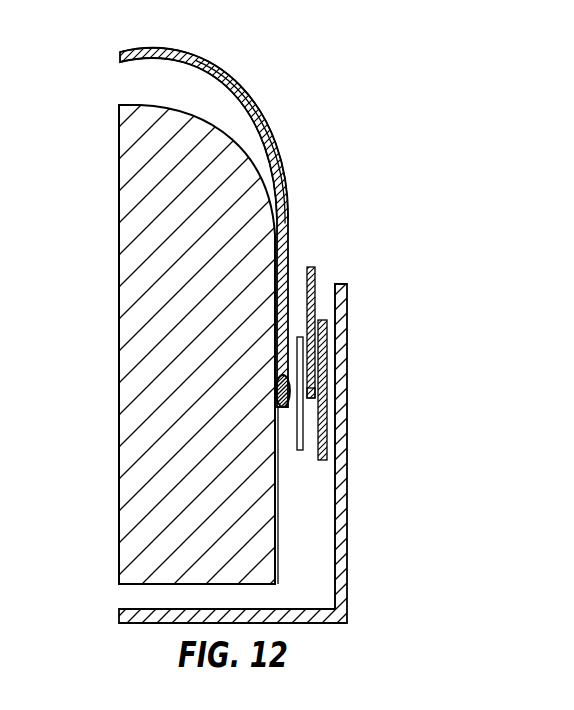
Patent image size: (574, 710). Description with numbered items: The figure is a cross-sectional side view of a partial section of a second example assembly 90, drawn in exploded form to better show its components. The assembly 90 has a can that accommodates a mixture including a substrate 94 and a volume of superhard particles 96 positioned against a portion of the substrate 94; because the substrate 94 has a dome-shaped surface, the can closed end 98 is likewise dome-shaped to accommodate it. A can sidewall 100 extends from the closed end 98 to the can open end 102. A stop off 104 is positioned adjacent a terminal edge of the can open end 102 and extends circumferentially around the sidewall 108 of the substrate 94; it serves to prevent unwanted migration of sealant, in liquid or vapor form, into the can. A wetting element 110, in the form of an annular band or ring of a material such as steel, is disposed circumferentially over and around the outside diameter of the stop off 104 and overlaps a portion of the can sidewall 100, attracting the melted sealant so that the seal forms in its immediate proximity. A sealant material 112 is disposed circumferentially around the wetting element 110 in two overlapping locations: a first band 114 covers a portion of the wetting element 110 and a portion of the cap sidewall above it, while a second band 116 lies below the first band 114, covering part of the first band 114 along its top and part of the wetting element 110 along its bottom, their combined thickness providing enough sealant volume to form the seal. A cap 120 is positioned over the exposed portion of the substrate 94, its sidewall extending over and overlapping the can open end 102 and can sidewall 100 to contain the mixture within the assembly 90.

The assembly 90 is at (228, 83).
The substrate 94 is at (141, 197).
The superhard particles 96 is at (147, 87).
The can closed end 98 is at (197, 62).
The can sidewall 100 is at (287, 222).
The can open end 102 is at (290, 387).
The stop off 104 is at (292, 403).
The substrate sidewall 108 is at (278, 525).
The wetting element 110 is at (293, 437).
The sealant material 112 is at (323, 287).
The first band 114 is at (317, 272).
The second band 116 is at (328, 330).
The cap 120 is at (348, 584).